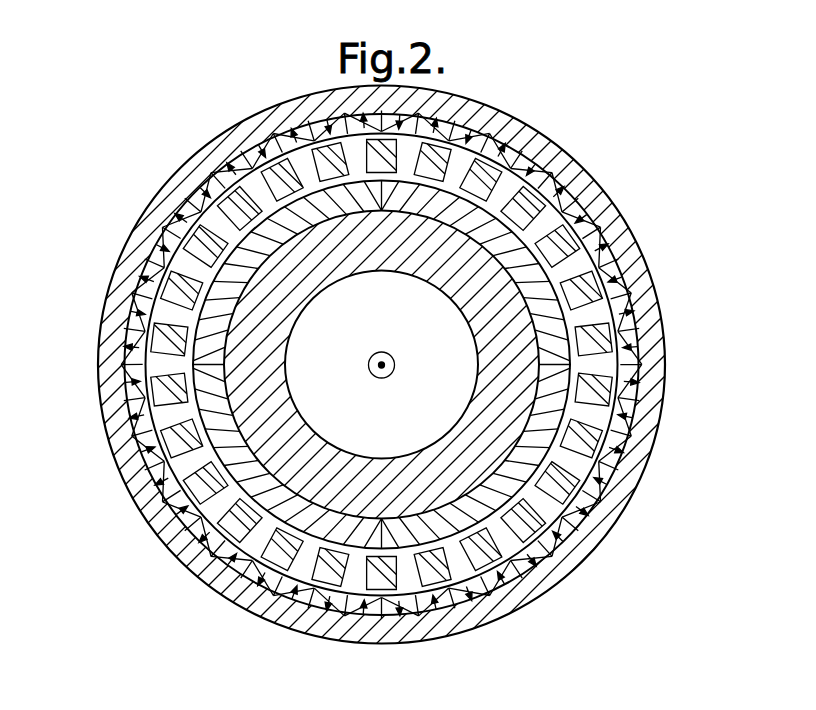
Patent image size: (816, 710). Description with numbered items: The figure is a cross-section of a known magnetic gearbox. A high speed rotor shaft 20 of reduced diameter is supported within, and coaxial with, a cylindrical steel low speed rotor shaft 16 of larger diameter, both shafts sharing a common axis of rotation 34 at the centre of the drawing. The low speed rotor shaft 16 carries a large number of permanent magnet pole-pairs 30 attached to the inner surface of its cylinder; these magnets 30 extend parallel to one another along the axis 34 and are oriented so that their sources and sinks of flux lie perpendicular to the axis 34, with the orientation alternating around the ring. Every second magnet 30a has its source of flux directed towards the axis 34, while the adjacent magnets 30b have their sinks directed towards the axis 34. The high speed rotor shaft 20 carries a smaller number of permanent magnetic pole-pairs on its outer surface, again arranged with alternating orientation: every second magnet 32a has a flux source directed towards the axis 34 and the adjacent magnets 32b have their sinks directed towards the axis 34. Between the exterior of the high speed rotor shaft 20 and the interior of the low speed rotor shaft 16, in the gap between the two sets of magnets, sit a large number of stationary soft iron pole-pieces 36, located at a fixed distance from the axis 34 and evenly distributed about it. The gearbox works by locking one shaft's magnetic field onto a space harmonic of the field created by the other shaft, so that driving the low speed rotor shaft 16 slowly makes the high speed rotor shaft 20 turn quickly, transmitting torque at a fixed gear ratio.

The low speed rotor shaft 16 is at (483, 112).
The high speed rotor shaft 20 is at (413, 261).
The permanent magnet pole-pairs 30 is at (150, 262).
The magnet with source of flux directed towards the axis 30a is at (552, 184).
The magnet with sink of flux directed towards the axis 30b is at (285, 135).
The magnet with source of flux directed towards the axis 32a is at (203, 410).
The magnet with sink of flux directed towards the axis 32b is at (305, 540).
The common axis of rotation 34 is at (395, 364).
The stationary soft iron pole-pieces 36 is at (573, 508).